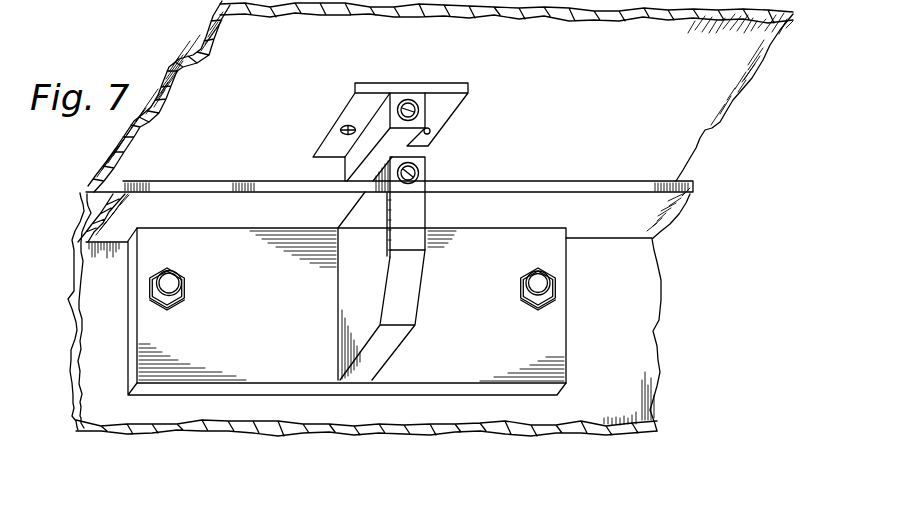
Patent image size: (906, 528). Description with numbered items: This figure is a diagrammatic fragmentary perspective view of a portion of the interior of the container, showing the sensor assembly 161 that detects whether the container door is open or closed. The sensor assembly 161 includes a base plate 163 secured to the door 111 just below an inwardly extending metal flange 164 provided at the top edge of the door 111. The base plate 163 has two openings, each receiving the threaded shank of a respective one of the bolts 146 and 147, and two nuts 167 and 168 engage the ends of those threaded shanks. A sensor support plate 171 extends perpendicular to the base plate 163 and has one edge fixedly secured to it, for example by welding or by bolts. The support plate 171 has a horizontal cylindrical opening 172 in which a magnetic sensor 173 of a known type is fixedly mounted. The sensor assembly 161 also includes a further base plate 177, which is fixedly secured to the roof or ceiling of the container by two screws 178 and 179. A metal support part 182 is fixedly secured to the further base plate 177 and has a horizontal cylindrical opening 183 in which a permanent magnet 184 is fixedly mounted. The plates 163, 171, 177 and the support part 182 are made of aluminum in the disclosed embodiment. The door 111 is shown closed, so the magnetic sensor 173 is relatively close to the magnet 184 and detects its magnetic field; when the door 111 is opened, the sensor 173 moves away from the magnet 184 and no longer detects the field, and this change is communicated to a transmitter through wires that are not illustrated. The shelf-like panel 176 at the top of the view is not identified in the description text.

The door 111 is at (652, 357).
The bolt 146 is at (530, 281).
The bolt 147 is at (172, 283).
The sensor assembly 161 is at (722, 311).
The base plate 163 is at (558, 324).
The metal flange 164 is at (601, 239).
The nut 167 is at (524, 307).
The nut 168 is at (174, 308).
The sensor support plate 171 is at (348, 288).
The horizontal cylindrical opening 172 is at (425, 192).
The magnetic sensor 173 is at (418, 170).
The shelf panel 176 is at (706, 130).
The further base plate 177 is at (358, 105).
The screw 178 is at (431, 131).
The screw 179 is at (338, 133).
The metal support part 182 is at (345, 159).
The horizontal cylindrical opening 183 is at (408, 99).
The permanent magnet 184 is at (418, 104).